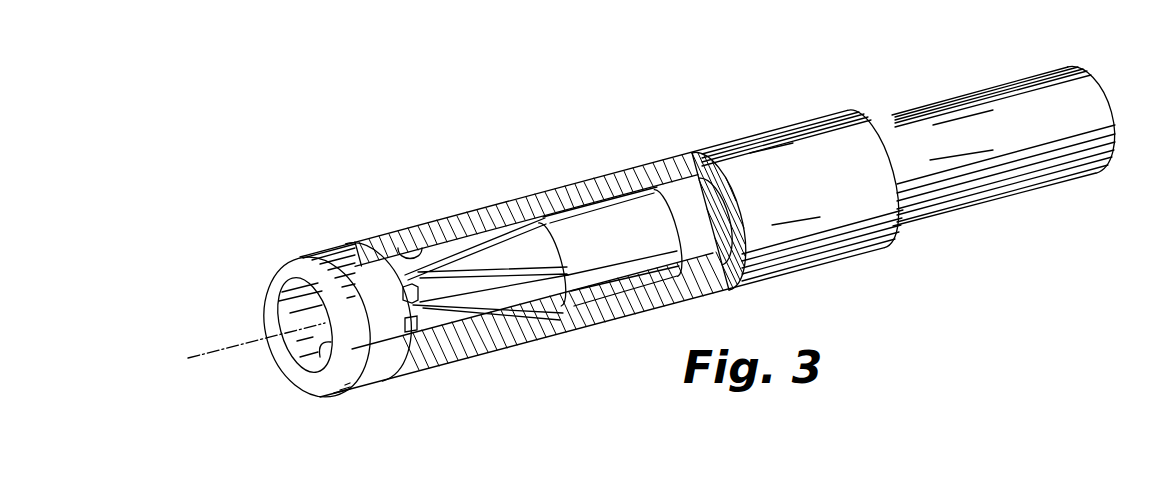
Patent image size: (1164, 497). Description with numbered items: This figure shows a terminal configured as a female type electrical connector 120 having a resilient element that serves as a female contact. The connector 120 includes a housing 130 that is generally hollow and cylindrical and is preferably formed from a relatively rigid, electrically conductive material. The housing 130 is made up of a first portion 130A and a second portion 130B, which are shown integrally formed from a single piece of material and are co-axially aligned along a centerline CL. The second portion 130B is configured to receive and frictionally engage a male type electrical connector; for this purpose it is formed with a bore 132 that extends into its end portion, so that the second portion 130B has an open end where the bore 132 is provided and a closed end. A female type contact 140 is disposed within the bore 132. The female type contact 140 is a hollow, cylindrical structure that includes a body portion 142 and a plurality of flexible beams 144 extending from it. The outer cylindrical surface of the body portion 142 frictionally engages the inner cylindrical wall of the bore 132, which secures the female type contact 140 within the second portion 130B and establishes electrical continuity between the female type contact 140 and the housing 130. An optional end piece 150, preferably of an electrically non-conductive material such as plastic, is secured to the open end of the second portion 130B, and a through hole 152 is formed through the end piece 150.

The female type electrical connector 120 is at (518, 90).
The housing 130 is at (811, 110).
The first portion 130A is at (1008, 118).
The second portion 130B is at (795, 152).
The bore 132 is at (373, 253).
The female type contact 140 is at (567, 194).
The body portion 142 is at (620, 238).
The flexible beams 144 is at (477, 245).
The end piece 150 is at (285, 272).
The through hole 152 is at (322, 357).
The centerline CL is at (205, 352).